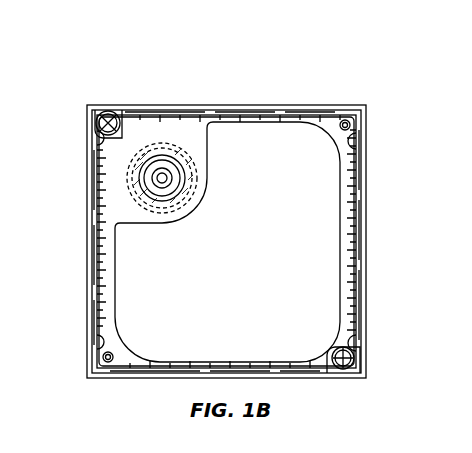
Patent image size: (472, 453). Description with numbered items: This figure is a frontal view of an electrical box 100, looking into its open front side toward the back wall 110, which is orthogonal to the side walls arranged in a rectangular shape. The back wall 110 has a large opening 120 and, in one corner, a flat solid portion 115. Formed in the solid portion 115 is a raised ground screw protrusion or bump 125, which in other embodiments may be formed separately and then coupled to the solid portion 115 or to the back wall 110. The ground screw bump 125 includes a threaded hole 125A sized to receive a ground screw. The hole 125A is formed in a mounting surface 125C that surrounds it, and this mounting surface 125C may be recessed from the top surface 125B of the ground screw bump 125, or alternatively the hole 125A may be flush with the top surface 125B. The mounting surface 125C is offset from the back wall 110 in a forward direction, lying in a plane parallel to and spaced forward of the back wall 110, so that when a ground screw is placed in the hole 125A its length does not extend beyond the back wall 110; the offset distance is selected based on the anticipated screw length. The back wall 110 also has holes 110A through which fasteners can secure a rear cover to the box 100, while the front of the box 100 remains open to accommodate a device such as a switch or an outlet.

The box 100 is at (344, 55).
The back wall 110 is at (355, 203).
The holes 110A is at (341, 120).
The solid portion 115 is at (178, 125).
The opening 120 is at (243, 308).
The ground screw bump 125 is at (162, 144).
The threaded hole 125A is at (163, 183).
The top surface 125B is at (177, 172).
The mounting surface 125C is at (175, 178).